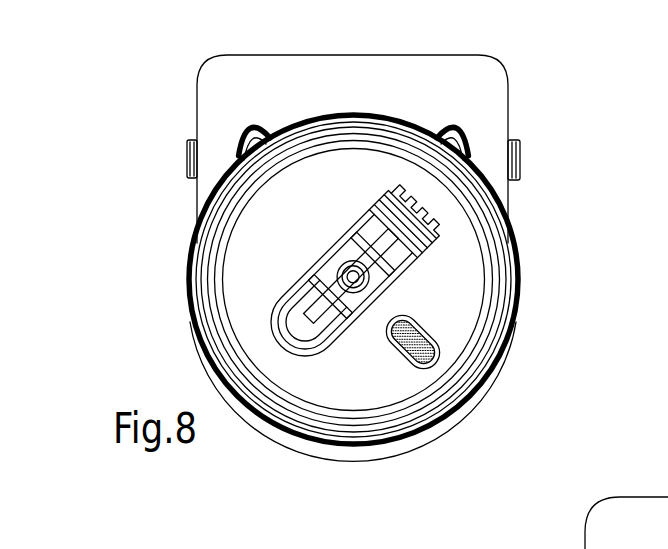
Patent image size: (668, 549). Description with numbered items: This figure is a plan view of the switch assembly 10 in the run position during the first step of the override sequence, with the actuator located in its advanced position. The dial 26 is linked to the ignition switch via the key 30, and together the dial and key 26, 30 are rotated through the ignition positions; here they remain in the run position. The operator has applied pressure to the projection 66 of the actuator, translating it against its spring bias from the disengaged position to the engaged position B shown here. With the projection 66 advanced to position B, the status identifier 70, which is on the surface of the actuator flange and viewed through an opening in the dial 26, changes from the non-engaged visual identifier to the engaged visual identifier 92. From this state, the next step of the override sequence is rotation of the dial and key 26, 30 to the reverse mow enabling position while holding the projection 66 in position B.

The switch assembly 10 is at (580, 135).
The dial 26 is at (327, 387).
The key 30 is at (372, 288).
The projection 66 is at (445, 220).
The engaged position B is at (440, 237).
The status identifier 70 is at (461, 379).
The engaged visual identifier 92 is at (425, 348).